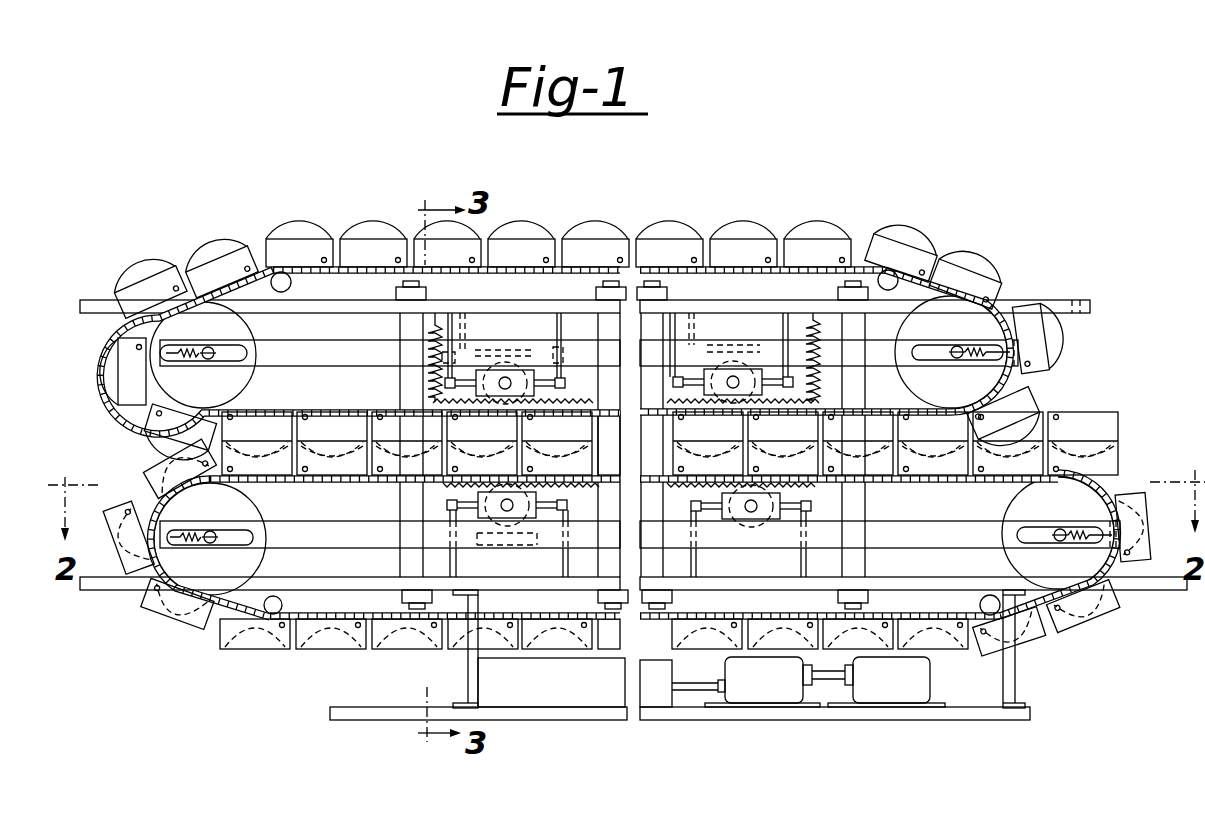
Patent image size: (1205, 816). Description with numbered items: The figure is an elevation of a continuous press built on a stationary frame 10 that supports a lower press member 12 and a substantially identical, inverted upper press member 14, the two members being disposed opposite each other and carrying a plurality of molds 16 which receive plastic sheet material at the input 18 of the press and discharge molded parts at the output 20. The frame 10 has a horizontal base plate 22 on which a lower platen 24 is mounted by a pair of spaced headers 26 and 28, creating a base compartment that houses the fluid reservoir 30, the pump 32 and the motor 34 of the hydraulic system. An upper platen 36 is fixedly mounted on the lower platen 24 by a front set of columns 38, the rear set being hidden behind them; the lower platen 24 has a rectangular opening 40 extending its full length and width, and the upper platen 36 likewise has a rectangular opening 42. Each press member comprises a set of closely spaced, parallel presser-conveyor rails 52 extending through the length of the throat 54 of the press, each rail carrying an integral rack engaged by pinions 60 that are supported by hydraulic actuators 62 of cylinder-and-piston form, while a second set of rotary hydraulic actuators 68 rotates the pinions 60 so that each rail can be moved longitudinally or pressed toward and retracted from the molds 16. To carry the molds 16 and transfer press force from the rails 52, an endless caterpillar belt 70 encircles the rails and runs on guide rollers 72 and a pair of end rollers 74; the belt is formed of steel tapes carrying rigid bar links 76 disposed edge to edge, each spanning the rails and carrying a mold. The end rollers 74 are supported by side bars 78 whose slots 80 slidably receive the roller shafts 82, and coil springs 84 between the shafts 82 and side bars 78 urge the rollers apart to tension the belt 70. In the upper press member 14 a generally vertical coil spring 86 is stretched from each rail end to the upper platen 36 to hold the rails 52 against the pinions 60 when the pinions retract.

The stationary frame 10 is at (1032, 663).
The lower press member 12 is at (184, 654).
The upper press member 14 is at (156, 246).
The molds 16 is at (770, 224).
The input 18 is at (1064, 428).
The output 20 is at (150, 456).
The horizontal base plate 22 is at (545, 706).
The lower platen 24 is at (515, 578).
The header 26 is at (466, 668).
The header 28 is at (1015, 687).
The fluid reservoir 30 is at (534, 694).
The pump 32 is at (755, 695).
The motor 34 is at (890, 695).
The upper platen 36 is at (508, 308).
The columns 38 is at (400, 505).
The rectangular opening 40 is at (1160, 590).
The rectangular opening 42 is at (1072, 300).
The presser-conveyor rails 52 is at (808, 496).
The throat 54 is at (434, 434).
The pinions 60 is at (540, 502).
The hydraulic actuators 62 is at (519, 563).
The hydraulic actuators 68 is at (566, 512).
The caterpillar belt 70 is at (325, 484).
The guide rollers 72 is at (284, 607).
The end rollers 74 is at (258, 562).
The bar links 76 is at (350, 615).
The side bars 78 is at (352, 552).
The slots 80 is at (250, 538).
The shafts 82 is at (212, 532).
The coil springs 84 is at (196, 536).
The coil spring 86 is at (428, 333).